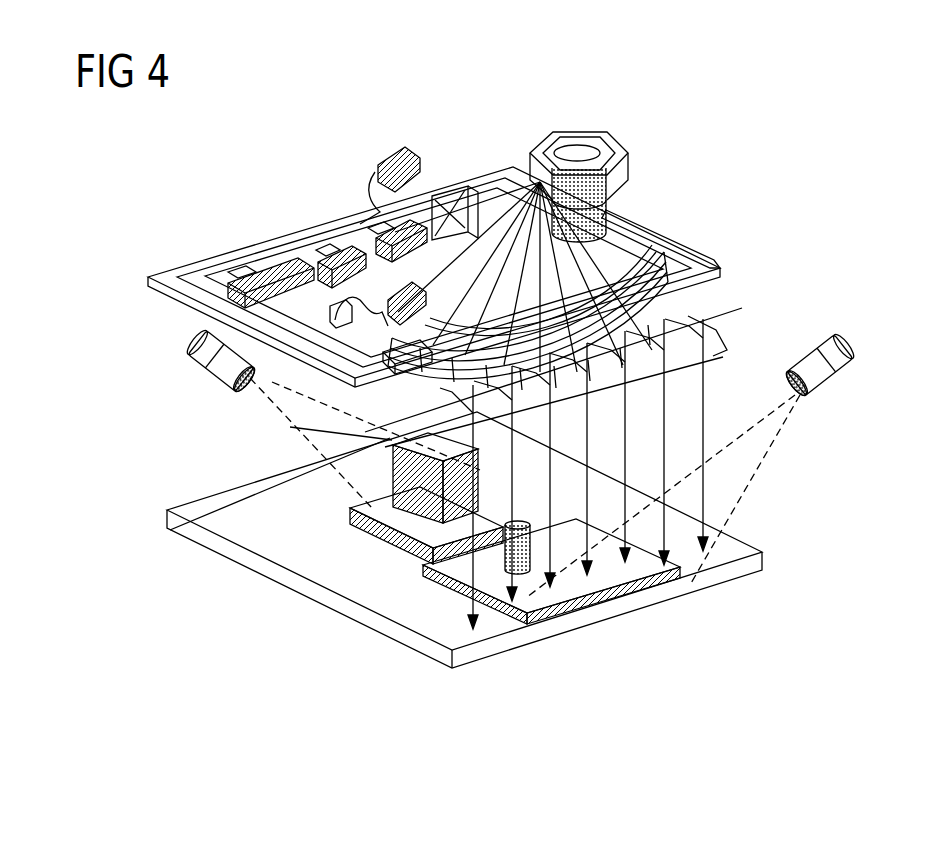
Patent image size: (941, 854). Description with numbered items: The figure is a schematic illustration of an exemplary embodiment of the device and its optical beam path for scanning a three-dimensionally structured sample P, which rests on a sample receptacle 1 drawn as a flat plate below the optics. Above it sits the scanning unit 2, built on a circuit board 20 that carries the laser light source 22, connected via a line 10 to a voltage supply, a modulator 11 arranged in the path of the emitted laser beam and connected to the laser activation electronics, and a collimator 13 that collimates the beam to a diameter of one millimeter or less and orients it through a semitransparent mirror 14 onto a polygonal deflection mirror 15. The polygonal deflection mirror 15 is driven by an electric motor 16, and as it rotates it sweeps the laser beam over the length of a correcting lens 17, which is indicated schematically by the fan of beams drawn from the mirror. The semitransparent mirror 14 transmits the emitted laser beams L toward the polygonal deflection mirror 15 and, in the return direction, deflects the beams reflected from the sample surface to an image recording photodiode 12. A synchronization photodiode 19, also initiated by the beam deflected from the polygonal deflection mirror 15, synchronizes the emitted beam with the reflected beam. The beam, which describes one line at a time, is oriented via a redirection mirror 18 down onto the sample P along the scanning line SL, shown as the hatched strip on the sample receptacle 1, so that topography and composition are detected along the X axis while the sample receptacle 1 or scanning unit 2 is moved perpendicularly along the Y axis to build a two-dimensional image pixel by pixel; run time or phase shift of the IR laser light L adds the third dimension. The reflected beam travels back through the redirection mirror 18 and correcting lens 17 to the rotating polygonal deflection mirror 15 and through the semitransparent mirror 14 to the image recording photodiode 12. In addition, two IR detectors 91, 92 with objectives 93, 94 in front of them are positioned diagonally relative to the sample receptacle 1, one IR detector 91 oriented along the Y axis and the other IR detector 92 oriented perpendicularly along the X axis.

The sample receptacle 1 is at (380, 587).
The scanning unit 2 is at (706, 180).
The line 10 is at (212, 298).
The modulator 11 is at (338, 225).
The image recording photodiode 12 is at (395, 150).
The collimator 13 is at (298, 242).
The semitransparent mirror 14 is at (440, 196).
The polygonal deflection mirror 15 is at (612, 143).
The electric motor 16 is at (606, 210).
The correcting lens 17 is at (395, 386).
The redirection mirror 18 is at (714, 334).
The synchronization photodiode 19 is at (336, 352).
The circuit board 20 is at (652, 255).
The laser light source 22 is at (258, 262).
The IR detector 91 is at (192, 341).
The IR detector 92 is at (850, 347).
The objective 93 is at (213, 383).
The objective 94 is at (828, 389).
The laser beams L is at (707, 423).
The sample P is at (345, 505).
The scanning line SL is at (572, 590).